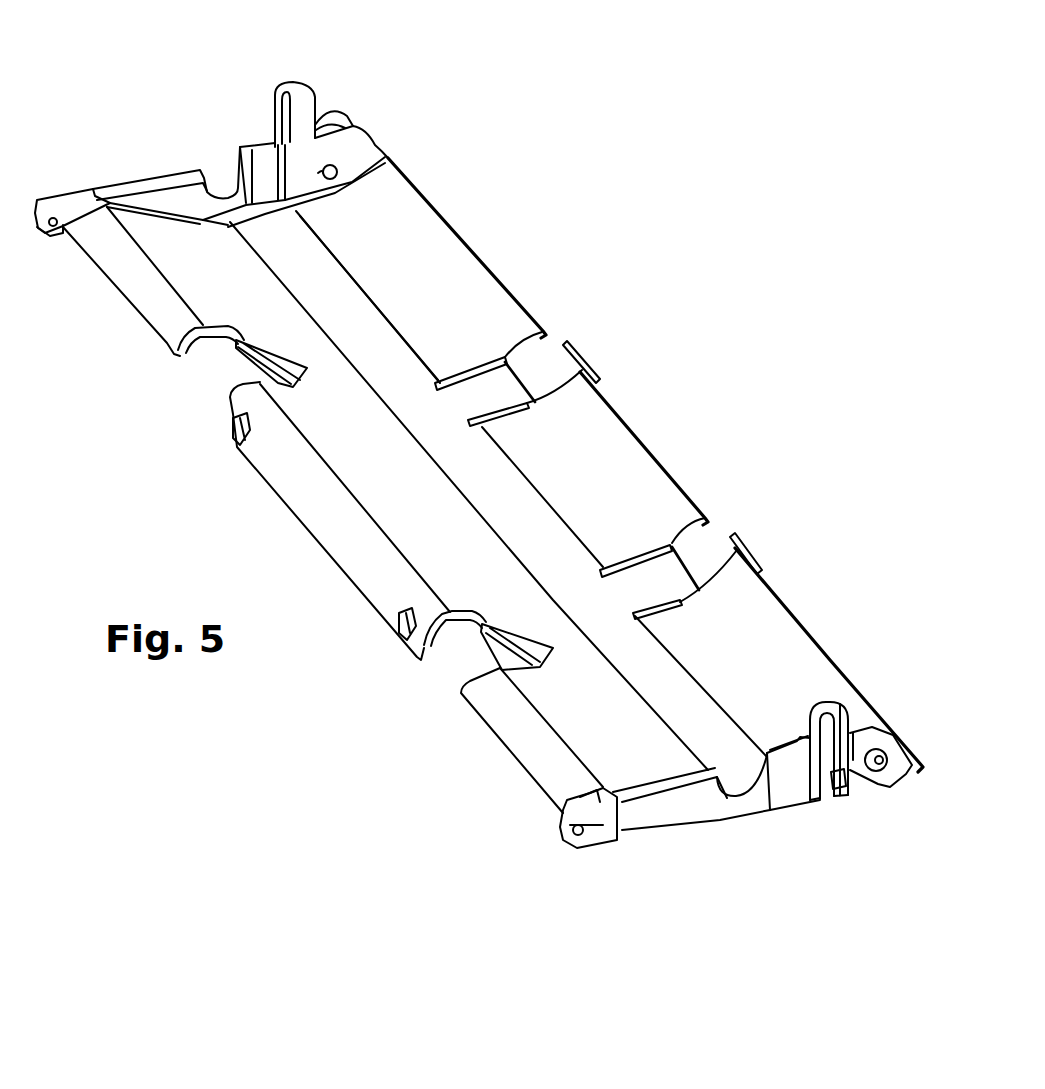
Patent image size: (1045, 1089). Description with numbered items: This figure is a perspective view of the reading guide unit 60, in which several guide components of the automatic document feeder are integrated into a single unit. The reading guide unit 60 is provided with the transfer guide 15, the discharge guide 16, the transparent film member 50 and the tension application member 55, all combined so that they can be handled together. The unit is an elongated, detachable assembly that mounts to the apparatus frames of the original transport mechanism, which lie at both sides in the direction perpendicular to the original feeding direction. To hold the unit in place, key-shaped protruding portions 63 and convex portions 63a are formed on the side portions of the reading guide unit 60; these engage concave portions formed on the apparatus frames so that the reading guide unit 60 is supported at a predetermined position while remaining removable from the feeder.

The reading guide unit 60 is at (665, 169).
The transparent film member 50 is at (428, 232).
The transfer guide 15 is at (177, 358).
The discharge guide 16 is at (705, 553).
The protruding portion 63 is at (837, 720).
The convex portion 63a is at (834, 788).
The tension application member 55 is at (895, 776).